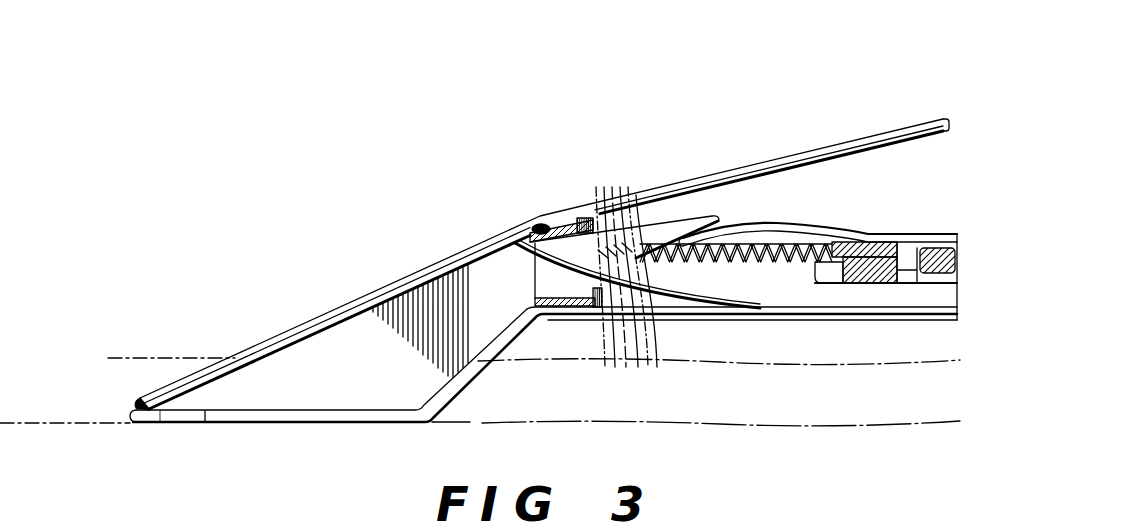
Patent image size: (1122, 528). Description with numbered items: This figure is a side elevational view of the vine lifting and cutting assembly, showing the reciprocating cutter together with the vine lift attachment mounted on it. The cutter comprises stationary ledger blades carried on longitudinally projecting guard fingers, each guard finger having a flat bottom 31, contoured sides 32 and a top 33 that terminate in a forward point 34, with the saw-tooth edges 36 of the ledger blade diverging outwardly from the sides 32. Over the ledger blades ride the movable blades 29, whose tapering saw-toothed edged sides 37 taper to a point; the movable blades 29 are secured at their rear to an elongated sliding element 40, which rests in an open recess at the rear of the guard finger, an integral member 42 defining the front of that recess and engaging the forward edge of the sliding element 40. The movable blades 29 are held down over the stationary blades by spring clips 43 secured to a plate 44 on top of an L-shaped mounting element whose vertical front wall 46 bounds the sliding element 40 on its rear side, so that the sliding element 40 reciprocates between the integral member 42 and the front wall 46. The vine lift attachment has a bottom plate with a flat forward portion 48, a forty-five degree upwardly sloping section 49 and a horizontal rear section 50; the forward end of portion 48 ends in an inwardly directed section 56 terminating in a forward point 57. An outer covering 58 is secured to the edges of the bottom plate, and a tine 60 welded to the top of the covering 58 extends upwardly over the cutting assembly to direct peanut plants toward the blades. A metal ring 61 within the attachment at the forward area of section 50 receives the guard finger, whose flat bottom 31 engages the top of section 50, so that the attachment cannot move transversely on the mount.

The movable blade 29 is at (808, 246).
The flat bottom 31 is at (536, 271).
The contoured sides 32 is at (569, 271).
The top 33 is at (667, 215).
The forward point 34 is at (545, 229).
The saw-tooth edges 36 is at (721, 264).
The tapering saw-toothed edged sides 37 is at (764, 264).
The sliding element 40 is at (864, 280).
The integral member 42 is at (831, 278).
The spring clip 43 is at (772, 228).
The plate 44 is at (934, 252).
The vertical front wall 46 is at (906, 260).
The flat forward portion 48 is at (268, 426).
The upwardly sloping section 49 is at (480, 364).
The horizontal rear section 50 is at (667, 275).
The inwardly directed section 56 is at (177, 416).
The forward point 57 is at (135, 408).
The outer covering 58 is at (352, 379).
The tine 60 is at (342, 310).
The metal ring 61 is at (536, 302).